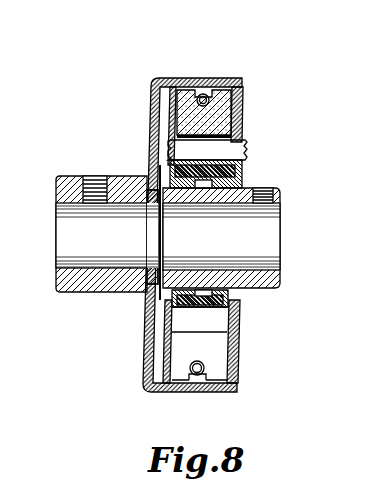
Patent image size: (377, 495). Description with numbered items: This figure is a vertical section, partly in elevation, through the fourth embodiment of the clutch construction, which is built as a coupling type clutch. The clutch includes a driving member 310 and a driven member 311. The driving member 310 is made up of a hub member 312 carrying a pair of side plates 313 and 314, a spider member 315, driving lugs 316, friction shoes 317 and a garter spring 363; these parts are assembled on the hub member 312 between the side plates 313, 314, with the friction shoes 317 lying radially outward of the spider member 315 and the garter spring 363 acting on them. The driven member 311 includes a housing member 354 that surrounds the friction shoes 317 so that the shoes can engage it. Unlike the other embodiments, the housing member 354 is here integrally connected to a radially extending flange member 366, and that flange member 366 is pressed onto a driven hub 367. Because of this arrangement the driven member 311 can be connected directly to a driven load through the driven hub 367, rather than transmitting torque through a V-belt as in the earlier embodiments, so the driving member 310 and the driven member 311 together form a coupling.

The driving member 310 is at (244, 121).
The driven member 311 is at (148, 113).
The hub member 312 is at (263, 232).
The side plate 313 is at (243, 96).
The side plate 314 is at (172, 98).
The spider member 315 is at (238, 302).
The driving lugs 316 is at (238, 148).
The friction shoes 317 is at (195, 91).
The housing member 354 is at (178, 389).
The garter spring 363 is at (206, 371).
The flange member 366 is at (147, 327).
The driven hub 367 is at (74, 184).